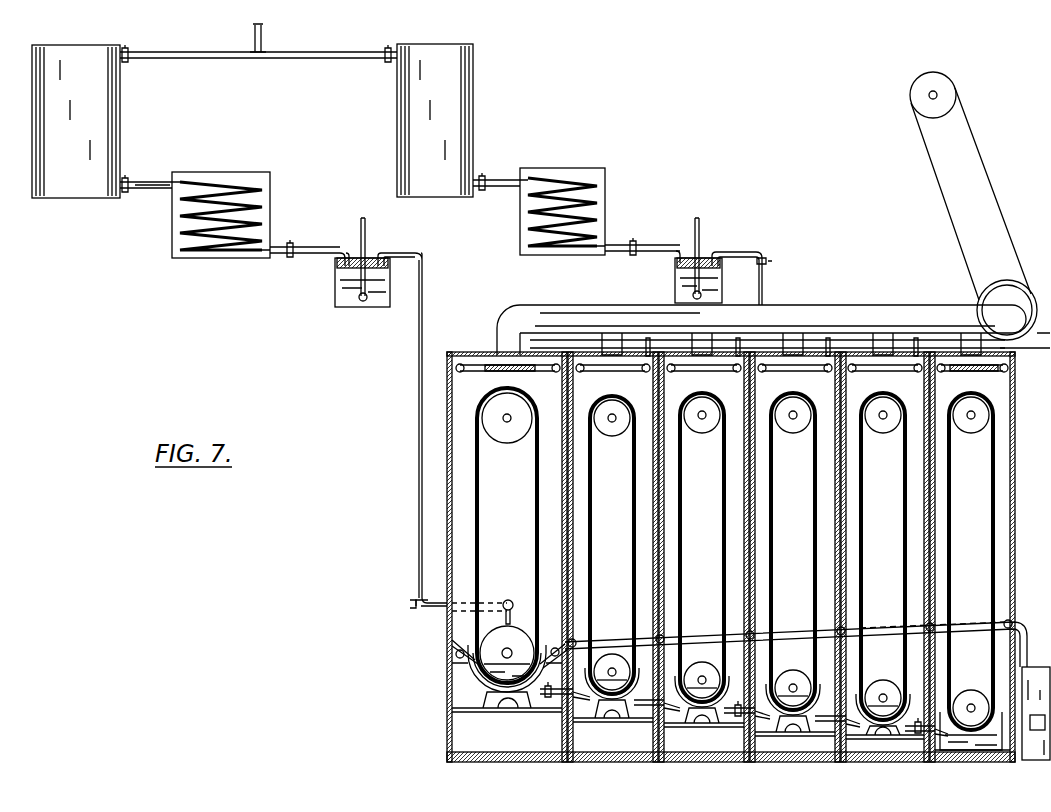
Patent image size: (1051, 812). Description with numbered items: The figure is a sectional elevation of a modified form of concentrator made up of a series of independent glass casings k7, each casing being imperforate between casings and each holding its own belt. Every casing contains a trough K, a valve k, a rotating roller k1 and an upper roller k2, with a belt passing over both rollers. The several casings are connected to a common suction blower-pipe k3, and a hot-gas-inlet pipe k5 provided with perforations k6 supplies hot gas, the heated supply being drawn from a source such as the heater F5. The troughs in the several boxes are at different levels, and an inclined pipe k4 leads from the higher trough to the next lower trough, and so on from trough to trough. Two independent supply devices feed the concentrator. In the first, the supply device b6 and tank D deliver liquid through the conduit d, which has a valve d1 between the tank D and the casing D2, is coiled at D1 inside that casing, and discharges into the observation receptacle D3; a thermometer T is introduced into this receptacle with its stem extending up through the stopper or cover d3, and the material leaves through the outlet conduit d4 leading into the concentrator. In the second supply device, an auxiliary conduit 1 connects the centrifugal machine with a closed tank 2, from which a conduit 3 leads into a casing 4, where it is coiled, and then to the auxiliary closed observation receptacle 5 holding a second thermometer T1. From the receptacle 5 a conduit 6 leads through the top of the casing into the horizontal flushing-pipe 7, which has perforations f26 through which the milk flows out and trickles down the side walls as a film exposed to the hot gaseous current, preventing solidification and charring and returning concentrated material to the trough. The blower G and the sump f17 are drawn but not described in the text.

The tank D is at (76, 121).
The closed tank 2 is at (435, 120).
The supply device b6 is at (182, 58).
The auxiliary conduit 1 is at (352, 55).
The valve d1 is at (128, 177).
The conduit d is at (158, 183).
The coil D1 is at (172, 210).
The casing D2 is at (271, 197).
The observation receptacle D3 is at (334, 288).
The thermometer T is at (362, 222).
The stopper or cover d3 is at (370, 262).
The outlet conduit d4 is at (425, 298).
The conduit 3 is at (510, 179).
The casing 4 is at (520, 210).
The auxiliary closed observation receptacle 5 is at (676, 276).
The second thermometer T1 is at (699, 223).
The auxiliary supply conduit 6 is at (746, 250).
The common suction blower-pipe k3 is at (824, 316).
The fan / blower G is at (979, 290).
The independent casing k7 is at (447, 633).
The flushing-pipe 7 is at (535, 374).
The perforations f26 is at (462, 374).
The upper roller k2 is at (973, 434).
The rotating roller k1 is at (734, 676).
The trough K is at (476, 683).
The sump tank f17 is at (955, 696).
The hot-gas-inlet pipe k5 is at (1018, 620).
The perforations k6 is at (958, 632).
The heater F5 is at (1032, 760).
The inclined pipe k4 is at (536, 702).
The valve k is at (916, 720).